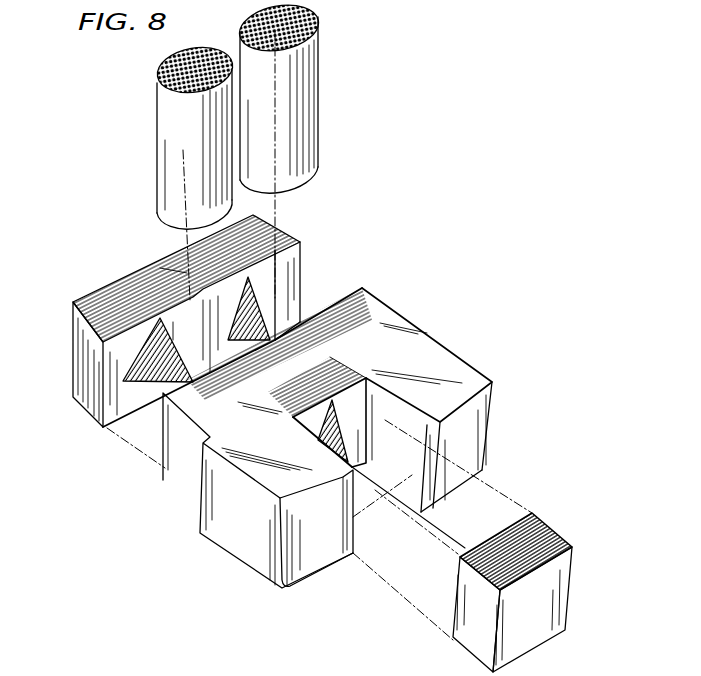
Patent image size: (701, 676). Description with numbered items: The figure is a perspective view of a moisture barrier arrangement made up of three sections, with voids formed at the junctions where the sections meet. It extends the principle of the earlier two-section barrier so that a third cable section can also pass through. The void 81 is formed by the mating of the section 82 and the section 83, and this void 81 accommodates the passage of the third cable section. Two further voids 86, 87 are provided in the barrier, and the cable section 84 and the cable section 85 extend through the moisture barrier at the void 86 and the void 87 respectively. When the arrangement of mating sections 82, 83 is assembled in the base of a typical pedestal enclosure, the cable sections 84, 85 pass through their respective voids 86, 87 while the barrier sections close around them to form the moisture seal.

The void 81 is at (346, 420).
The section 82 is at (283, 236).
The section 83 is at (396, 344).
The cable section 84 is at (187, 144).
The cable section 85 is at (297, 76).
The void 86 is at (160, 355).
The void 87 is at (252, 292).